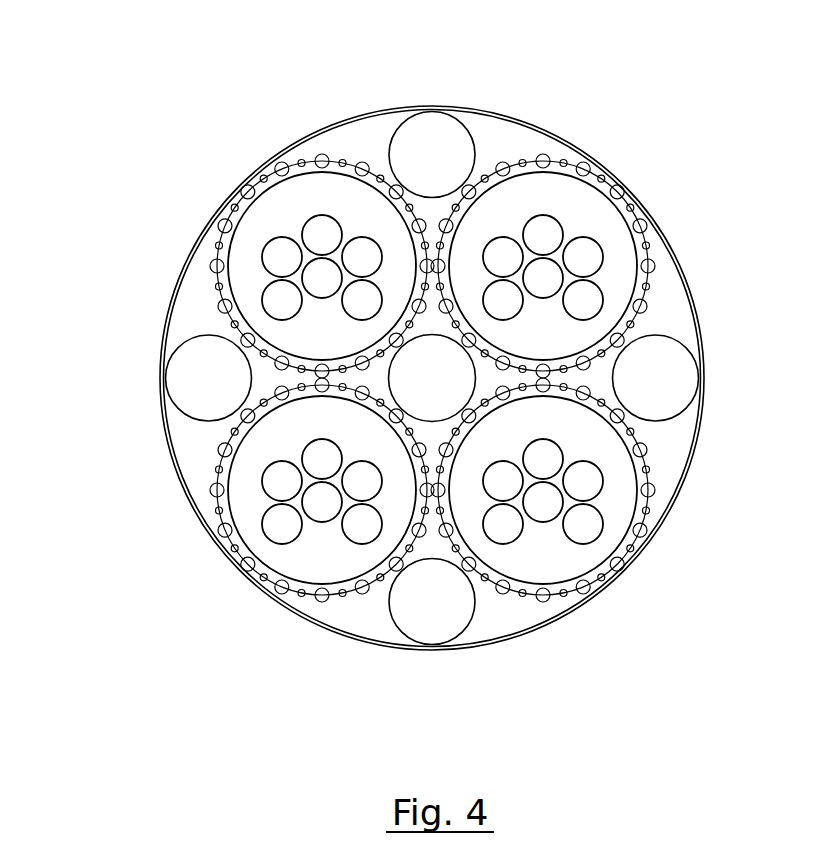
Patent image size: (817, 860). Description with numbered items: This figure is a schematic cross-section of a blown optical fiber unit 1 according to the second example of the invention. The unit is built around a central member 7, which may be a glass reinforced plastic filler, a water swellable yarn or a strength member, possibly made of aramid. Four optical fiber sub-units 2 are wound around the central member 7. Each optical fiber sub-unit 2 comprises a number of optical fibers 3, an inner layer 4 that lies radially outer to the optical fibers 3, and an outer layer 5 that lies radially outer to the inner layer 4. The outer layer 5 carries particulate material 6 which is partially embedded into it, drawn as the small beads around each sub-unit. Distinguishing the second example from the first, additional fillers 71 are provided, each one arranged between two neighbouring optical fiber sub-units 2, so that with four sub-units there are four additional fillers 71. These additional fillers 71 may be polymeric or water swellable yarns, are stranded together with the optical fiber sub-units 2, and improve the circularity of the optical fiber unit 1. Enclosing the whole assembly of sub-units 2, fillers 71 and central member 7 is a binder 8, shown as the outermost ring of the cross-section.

The blown optical fiber unit 1 is at (92, 104).
The optical fiber sub-unit 2 is at (436, 378).
The optical fiber 3 is at (267, 242).
The inner layer 4 is at (277, 200).
The outer layer 5 is at (295, 167).
The particulate material 6 is at (215, 244).
The central member 7 is at (424, 390).
The additional filler 71 is at (422, 138).
The binder 8 is at (702, 355).